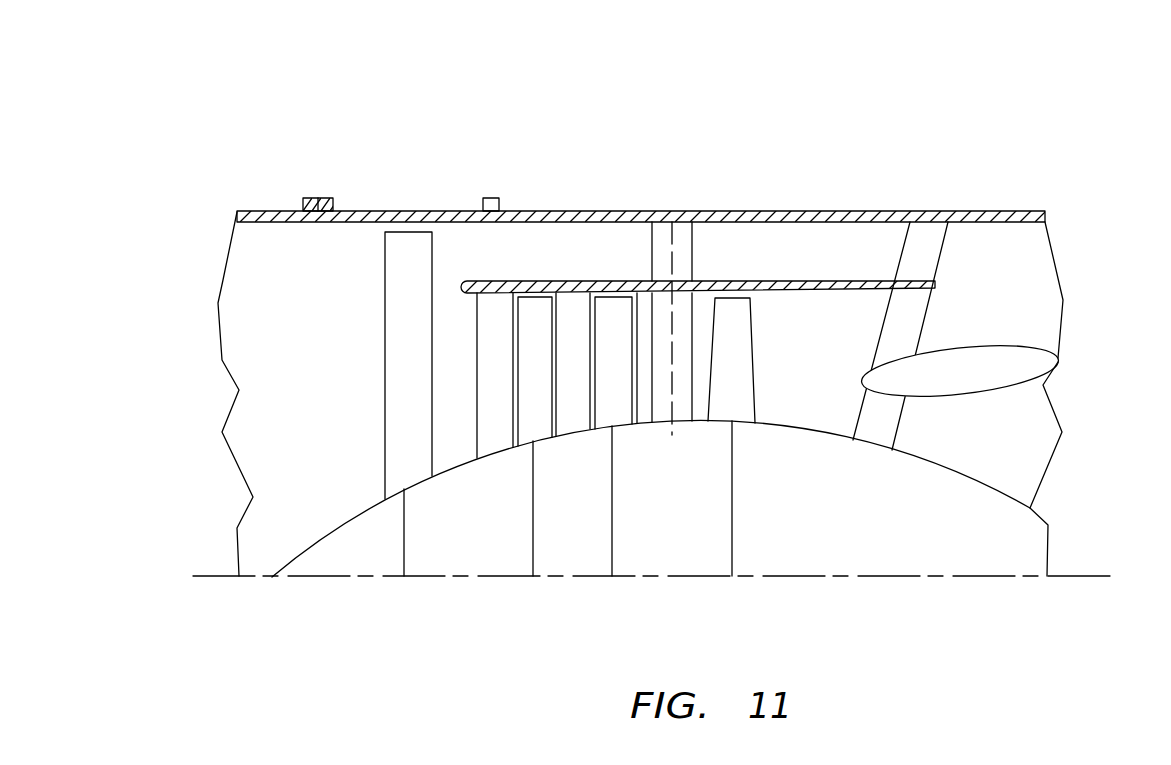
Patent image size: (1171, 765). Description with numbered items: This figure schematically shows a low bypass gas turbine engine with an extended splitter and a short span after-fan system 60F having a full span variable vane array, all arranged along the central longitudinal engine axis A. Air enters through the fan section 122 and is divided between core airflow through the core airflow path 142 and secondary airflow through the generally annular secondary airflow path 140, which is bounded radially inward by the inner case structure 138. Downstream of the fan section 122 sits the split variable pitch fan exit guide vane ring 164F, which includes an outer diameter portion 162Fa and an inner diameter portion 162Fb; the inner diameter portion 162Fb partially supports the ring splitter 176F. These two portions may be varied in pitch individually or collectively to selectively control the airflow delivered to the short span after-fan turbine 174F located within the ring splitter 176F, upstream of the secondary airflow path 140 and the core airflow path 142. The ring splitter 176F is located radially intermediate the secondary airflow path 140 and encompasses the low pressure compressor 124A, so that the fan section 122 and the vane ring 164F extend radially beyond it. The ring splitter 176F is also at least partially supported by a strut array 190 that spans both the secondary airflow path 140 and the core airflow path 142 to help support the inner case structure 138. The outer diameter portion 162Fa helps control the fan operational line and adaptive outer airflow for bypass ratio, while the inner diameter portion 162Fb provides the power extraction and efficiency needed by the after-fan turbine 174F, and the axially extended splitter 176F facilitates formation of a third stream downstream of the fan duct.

The after-fan system 60F is at (543, 125).
The split variable pitch fan exit guide vane ring 164F is at (680, 203).
The outer diameter portion 162Fa is at (662, 248).
The inner diameter portion 162Fb is at (662, 318).
The ring splitter 176F is at (733, 278).
The short span after-fan turbine 174F is at (738, 342).
The fan section 122 is at (420, 592).
The low pressure compressor 124A is at (633, 592).
The strut array 190 is at (912, 313).
The secondary airflow path 140 is at (1033, 307).
The inner case structure 138 is at (1030, 370).
The core airflow path 142 is at (1015, 415).
The central longitudinal engine axis A is at (206, 578).